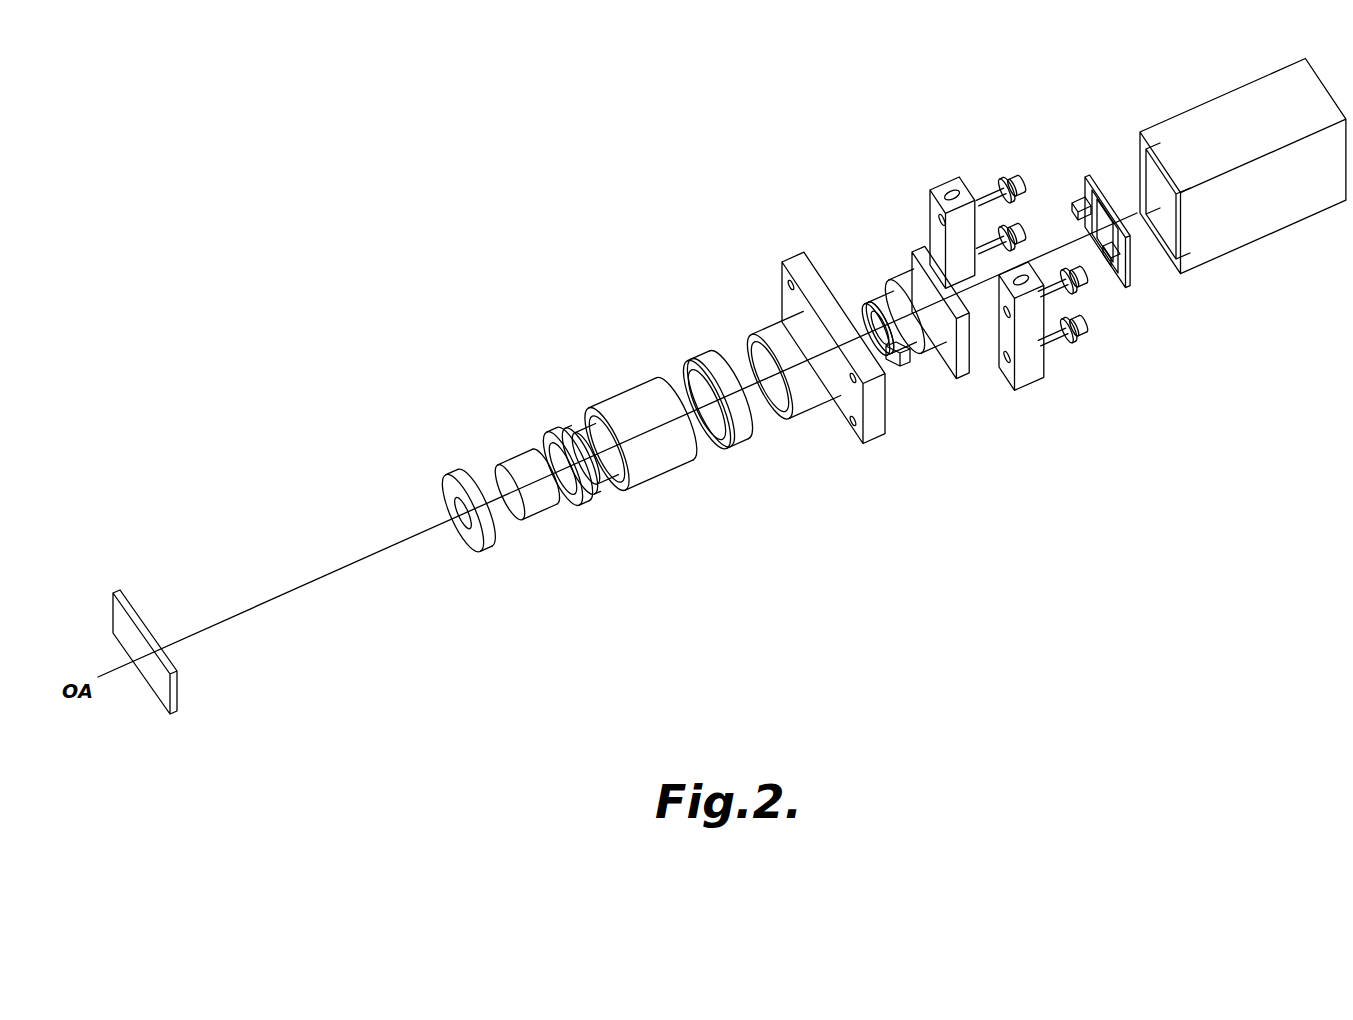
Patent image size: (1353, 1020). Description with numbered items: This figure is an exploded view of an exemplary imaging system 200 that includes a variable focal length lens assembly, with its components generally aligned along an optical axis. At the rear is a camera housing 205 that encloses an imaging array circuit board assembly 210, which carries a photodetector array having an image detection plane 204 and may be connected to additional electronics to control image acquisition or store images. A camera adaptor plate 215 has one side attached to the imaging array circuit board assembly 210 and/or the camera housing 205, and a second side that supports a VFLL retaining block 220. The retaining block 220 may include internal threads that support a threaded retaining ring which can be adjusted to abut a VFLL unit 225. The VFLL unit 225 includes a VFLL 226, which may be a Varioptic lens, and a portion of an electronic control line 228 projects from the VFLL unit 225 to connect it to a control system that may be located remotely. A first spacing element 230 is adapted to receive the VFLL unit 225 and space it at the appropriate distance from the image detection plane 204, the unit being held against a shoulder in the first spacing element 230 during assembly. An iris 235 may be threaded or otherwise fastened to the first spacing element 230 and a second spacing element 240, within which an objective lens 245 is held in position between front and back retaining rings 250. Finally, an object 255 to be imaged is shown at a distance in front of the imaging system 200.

The imaging system 200 is at (649, 159).
The image detection plane 204 is at (1083, 222).
The camera housing 205 is at (1235, 265).
The imaging array circuit board assembly 210 is at (1120, 290).
The camera adaptor plate 215 is at (1040, 388).
The VFLL retaining block 220 is at (893, 272).
The VFLL unit 225 is at (905, 337).
The VFLL 226 is at (870, 298).
The electronic control line 228 is at (892, 368).
The first spacing element 230 is at (760, 325).
The iris 235 is at (744, 442).
The second spacing element 240 is at (660, 480).
The objective lens 245 is at (538, 508).
The retaining rings 250 is at (545, 435).
The object 255 is at (178, 715).